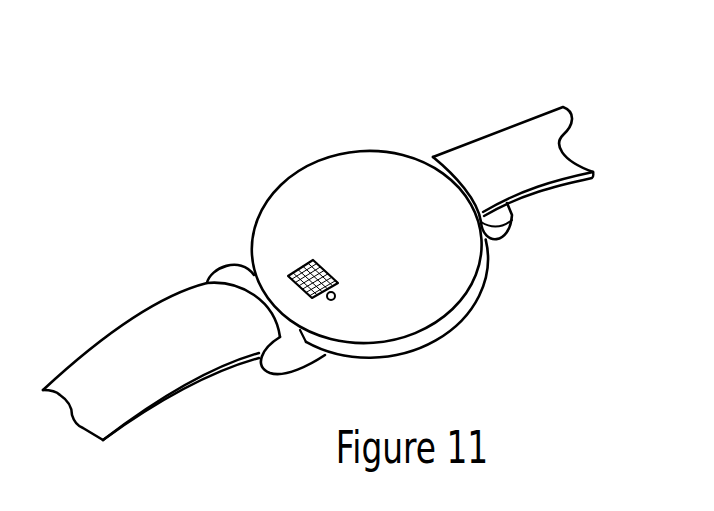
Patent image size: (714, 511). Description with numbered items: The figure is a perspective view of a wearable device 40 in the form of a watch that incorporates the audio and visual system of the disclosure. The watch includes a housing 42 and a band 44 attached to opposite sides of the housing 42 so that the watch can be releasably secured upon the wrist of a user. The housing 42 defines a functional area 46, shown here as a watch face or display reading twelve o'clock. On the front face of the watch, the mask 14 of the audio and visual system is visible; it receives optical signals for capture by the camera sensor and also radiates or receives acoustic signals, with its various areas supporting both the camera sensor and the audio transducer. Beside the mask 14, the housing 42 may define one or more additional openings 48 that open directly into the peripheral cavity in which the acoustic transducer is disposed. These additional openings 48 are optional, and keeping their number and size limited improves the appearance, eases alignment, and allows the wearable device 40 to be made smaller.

The wearable device 40 is at (436, 90).
The housing 42 is at (467, 300).
The band 44 is at (133, 385).
The functional area 46 is at (390, 173).
The mask 14 is at (310, 263).
The additional openings 48 is at (335, 301).